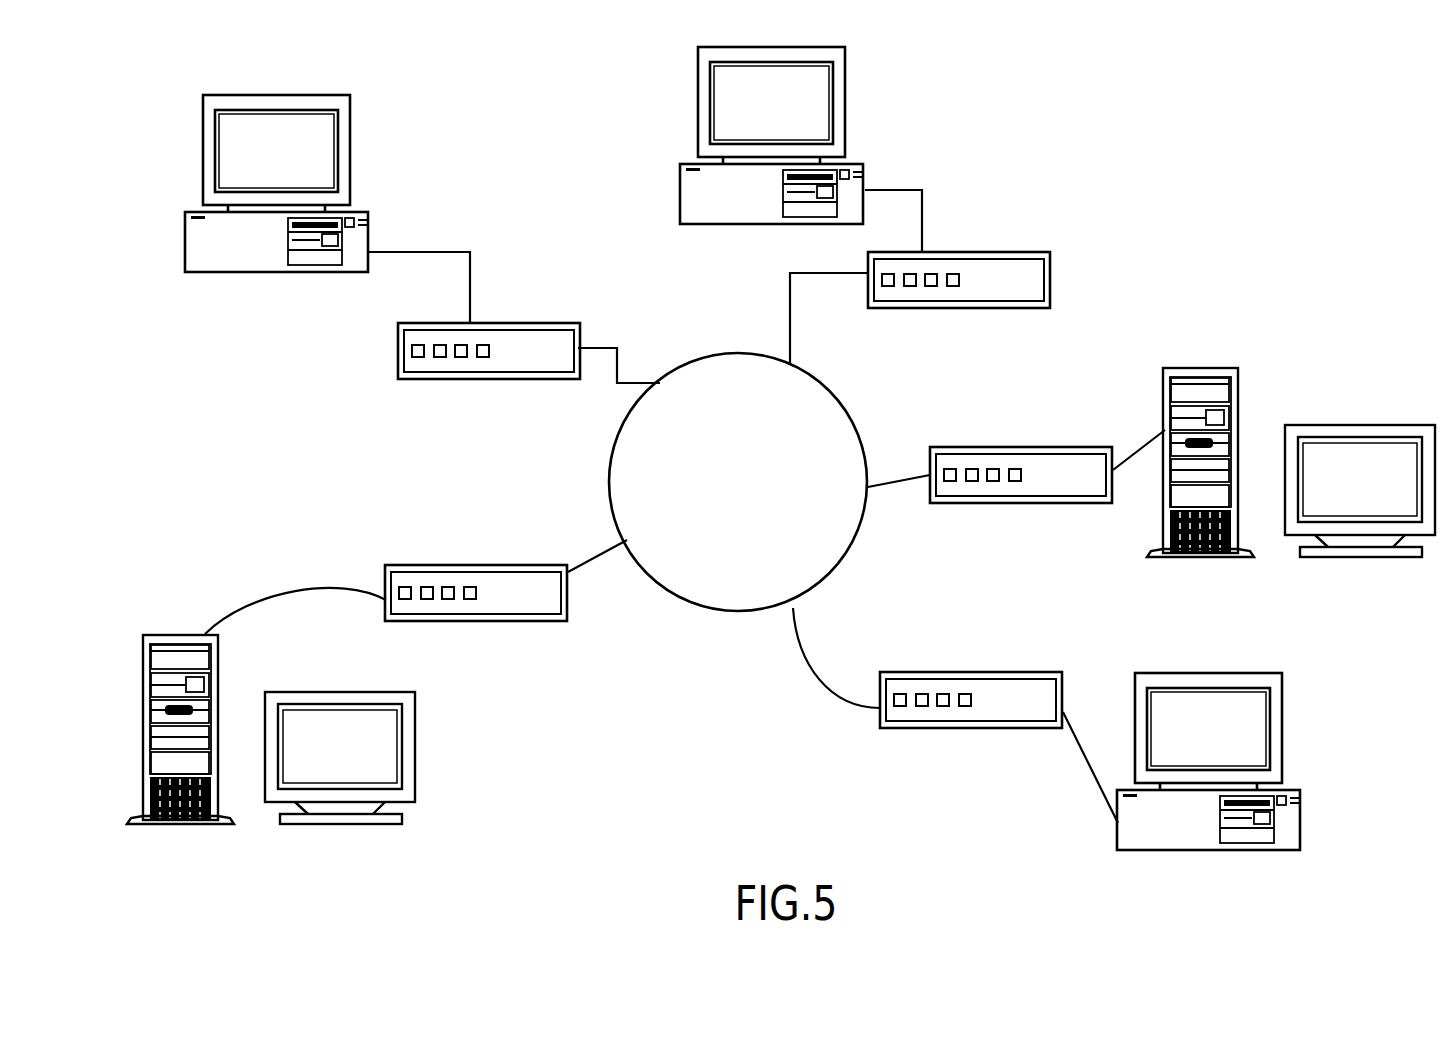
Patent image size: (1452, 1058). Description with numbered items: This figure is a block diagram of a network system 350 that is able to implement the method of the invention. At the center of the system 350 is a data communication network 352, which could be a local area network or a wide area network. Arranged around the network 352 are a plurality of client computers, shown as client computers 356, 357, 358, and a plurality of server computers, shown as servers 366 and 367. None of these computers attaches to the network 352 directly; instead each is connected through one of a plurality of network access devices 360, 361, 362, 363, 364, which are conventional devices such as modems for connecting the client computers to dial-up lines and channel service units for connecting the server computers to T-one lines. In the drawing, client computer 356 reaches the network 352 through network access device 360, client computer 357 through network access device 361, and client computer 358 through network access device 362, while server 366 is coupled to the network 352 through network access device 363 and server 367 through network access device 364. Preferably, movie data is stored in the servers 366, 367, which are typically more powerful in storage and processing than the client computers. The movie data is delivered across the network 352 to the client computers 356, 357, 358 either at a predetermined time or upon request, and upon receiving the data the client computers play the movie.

The network system 350 is at (1225, 203).
The data communication network 352 is at (665, 382).
The client computer 356 is at (352, 120).
The client computer 357 is at (848, 102).
The client computer 358 is at (1287, 705).
The network access device 360 is at (502, 322).
The network access device 361 is at (1017, 252).
The network access device 362 is at (1022, 672).
The network access device 363 is at (1068, 447).
The network access device 364 is at (458, 565).
The server computer 366 is at (1240, 385).
The server computer 367 is at (220, 658).